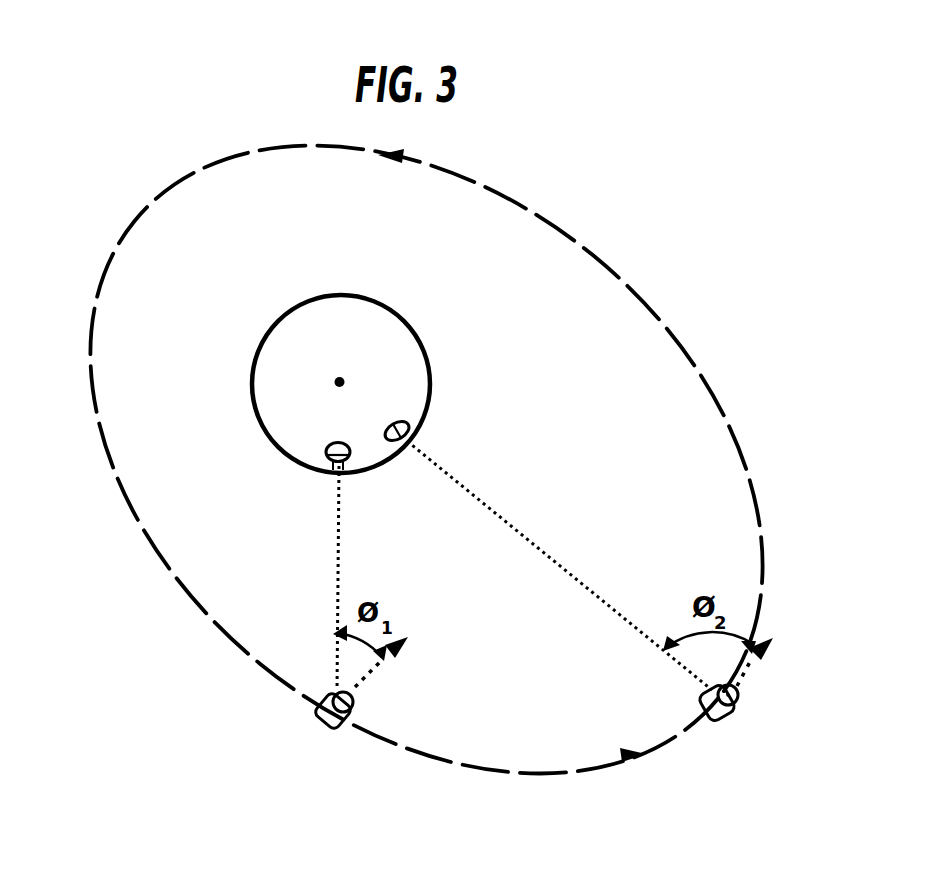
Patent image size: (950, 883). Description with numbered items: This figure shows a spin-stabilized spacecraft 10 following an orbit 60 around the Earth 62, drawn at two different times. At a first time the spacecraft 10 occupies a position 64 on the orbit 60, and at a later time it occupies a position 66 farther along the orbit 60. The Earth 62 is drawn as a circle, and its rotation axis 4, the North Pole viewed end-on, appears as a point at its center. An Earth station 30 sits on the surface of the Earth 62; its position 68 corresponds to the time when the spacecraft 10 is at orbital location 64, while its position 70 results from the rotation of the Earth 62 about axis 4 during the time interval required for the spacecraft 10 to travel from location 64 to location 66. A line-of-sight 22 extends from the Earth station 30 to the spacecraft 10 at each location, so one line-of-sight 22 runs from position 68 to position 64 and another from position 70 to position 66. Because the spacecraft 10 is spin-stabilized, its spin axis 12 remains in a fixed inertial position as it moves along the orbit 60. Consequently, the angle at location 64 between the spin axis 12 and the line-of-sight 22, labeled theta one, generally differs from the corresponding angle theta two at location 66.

The rotation axis 4 is at (339, 378).
The spacecraft 10 is at (350, 766).
The spin axis 12 is at (375, 673).
The line-of-sight 22 is at (334, 558).
The Earth station 30 is at (391, 401).
The orbit 60 is at (757, 492).
The Earth 62 is at (427, 359).
The position 64 is at (318, 728).
The position 66 is at (733, 755).
The position 68 is at (322, 470).
The position 70 is at (412, 433).